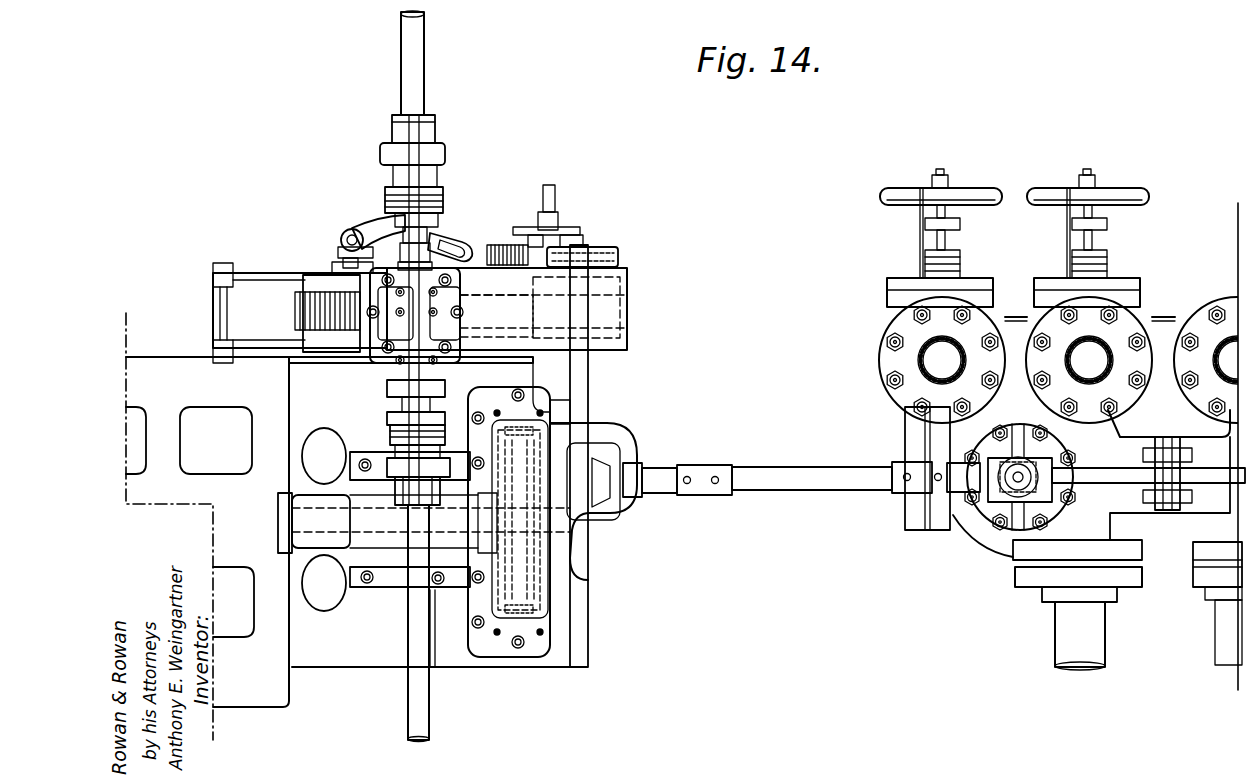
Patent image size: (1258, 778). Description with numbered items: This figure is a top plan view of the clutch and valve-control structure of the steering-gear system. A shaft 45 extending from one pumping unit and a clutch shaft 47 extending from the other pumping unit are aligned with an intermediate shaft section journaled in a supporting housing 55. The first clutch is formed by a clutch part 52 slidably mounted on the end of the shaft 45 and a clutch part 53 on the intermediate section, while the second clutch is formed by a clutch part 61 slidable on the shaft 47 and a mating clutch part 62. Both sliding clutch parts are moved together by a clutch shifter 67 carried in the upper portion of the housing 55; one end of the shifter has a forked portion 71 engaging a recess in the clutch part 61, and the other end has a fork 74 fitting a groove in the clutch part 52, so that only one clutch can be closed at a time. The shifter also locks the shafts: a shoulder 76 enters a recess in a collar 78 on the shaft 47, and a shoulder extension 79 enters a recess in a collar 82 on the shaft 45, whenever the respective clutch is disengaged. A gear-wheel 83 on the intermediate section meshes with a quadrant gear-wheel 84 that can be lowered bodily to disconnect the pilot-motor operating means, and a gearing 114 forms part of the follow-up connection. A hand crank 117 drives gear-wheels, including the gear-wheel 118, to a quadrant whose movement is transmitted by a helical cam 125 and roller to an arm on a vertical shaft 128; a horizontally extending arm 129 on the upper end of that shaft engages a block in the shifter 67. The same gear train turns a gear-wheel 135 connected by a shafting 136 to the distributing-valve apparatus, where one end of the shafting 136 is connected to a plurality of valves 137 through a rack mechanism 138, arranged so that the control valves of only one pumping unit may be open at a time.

The shaft 45 is at (414, 82).
The clutch shaft 47 is at (409, 619).
The clutch part 52 is at (428, 222).
The clutch part 53 is at (432, 240).
The supporting housing 55 is at (448, 243).
The clutch part 61 is at (388, 420).
The clutch part 62 is at (388, 388).
The clutch shifter 67 is at (440, 205).
The forked portion 71 is at (390, 438).
The fork 74 is at (384, 201).
The shoulder 76 is at (422, 464).
The collar 78 is at (441, 497).
The shoulder extension 79 is at (446, 162).
The collar 82 is at (436, 146).
The gear-wheel 83 is at (464, 292).
The gear-wheel 84 is at (298, 313).
The gearing 114 is at (532, 465).
The hand crank 117 is at (556, 216).
The gear-wheel 118 is at (578, 234).
The helical cam 125 is at (462, 250).
The vertical shaft 128 is at (340, 241).
The horizontally extending arm 129 is at (368, 234).
The gear-wheel 135 is at (622, 256).
The shafting 136 is at (590, 369).
The valves 137 is at (1148, 473).
The rack mechanism 138 is at (1040, 462).